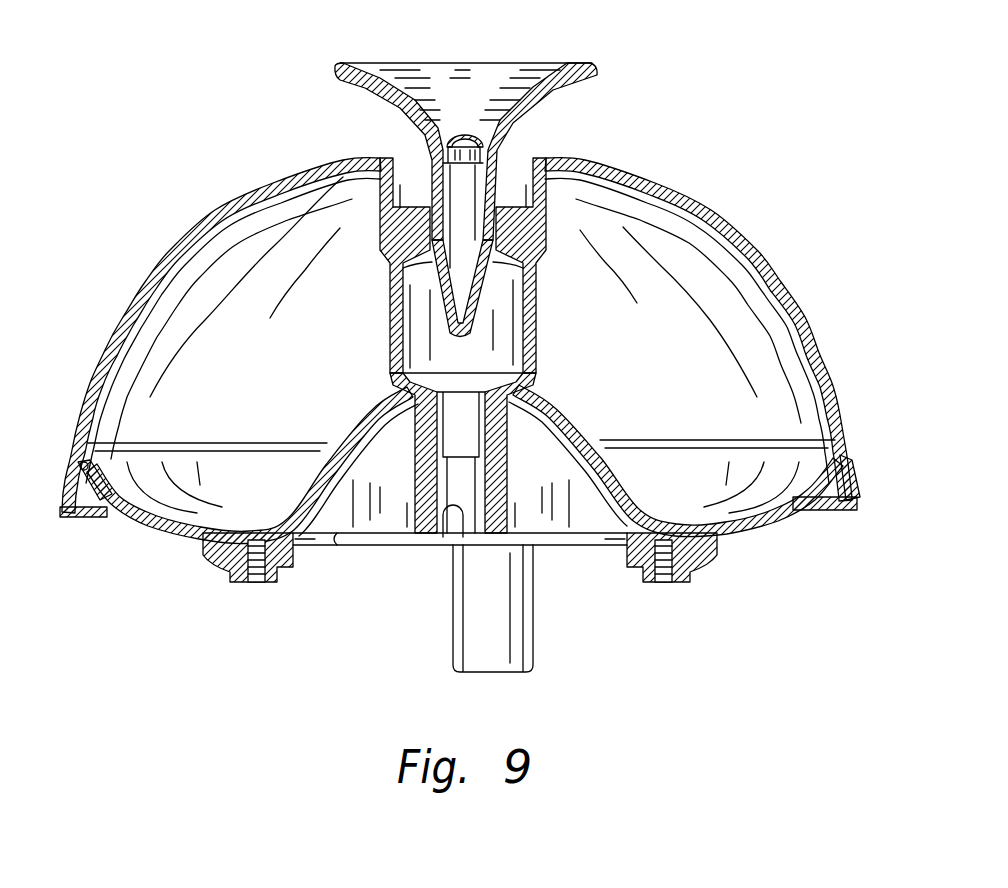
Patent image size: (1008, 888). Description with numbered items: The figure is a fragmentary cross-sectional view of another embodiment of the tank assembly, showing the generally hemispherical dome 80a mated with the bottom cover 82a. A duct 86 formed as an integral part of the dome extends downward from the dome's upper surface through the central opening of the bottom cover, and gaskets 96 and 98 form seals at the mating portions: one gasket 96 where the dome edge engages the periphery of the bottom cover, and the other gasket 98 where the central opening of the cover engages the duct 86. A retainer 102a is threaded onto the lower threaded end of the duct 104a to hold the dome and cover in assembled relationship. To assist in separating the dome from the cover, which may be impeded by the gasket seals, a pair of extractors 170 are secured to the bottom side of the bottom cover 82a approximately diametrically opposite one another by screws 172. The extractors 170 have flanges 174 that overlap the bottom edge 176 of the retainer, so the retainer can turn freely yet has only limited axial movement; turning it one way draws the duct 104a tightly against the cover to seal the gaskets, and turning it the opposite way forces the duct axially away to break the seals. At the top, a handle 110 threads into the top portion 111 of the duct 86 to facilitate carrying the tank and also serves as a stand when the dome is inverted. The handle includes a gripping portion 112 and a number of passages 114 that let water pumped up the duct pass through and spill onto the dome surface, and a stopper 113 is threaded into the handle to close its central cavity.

The dome 80a is at (700, 226).
The bottom cover 82a is at (775, 531).
The duct 86 is at (391, 318).
The gasket 96 is at (847, 462).
The gasket 98 is at (538, 363).
The retainer 102a is at (339, 536).
The duct 104a is at (455, 549).
The handle 110 is at (340, 66).
The top portion of the duct 111 is at (533, 248).
The gripping portion 112 is at (368, 88).
The stopper 113 is at (458, 133).
The passages 114 is at (500, 235).
The extractors 170 is at (225, 578).
The screws 172 is at (265, 584).
The flanges 174 is at (303, 545).
The bottom edge of the retainer 176 is at (321, 539).